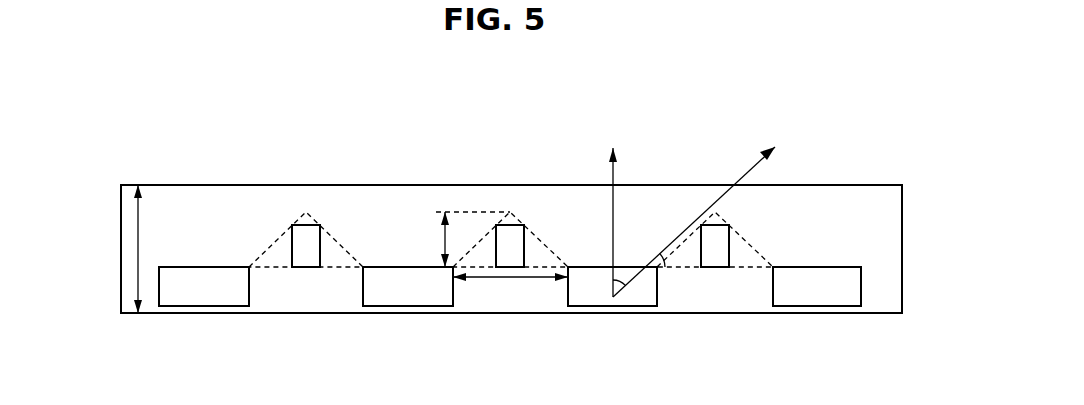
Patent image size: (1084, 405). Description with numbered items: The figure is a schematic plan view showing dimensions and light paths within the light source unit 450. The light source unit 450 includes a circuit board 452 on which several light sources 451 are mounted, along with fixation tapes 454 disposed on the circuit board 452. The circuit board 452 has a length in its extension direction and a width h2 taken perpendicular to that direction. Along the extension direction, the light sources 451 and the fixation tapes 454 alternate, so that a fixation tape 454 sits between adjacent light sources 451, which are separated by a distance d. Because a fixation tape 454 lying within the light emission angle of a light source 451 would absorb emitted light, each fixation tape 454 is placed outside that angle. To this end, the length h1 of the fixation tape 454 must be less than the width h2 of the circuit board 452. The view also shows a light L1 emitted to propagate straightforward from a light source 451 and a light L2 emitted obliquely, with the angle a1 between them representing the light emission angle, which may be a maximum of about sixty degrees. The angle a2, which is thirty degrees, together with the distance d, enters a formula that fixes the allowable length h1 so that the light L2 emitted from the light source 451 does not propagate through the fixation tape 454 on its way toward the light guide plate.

The light source unit 450 is at (188, 155).
The light source 451 is at (403, 278).
The circuit board 452 is at (262, 215).
The fixation tape 454 is at (512, 233).
The length of the fixation tape h1 is at (440, 240).
The width of the circuit board h2 is at (138, 247).
The distance between adjacent light sources d is at (513, 280).
The light emitted to propagate straightforward L1 is at (612, 210).
The light emitted from the light source L2 is at (701, 210).
The angle between light L2 and light L1 a1 is at (637, 278).
The angle a2 is at (678, 260).